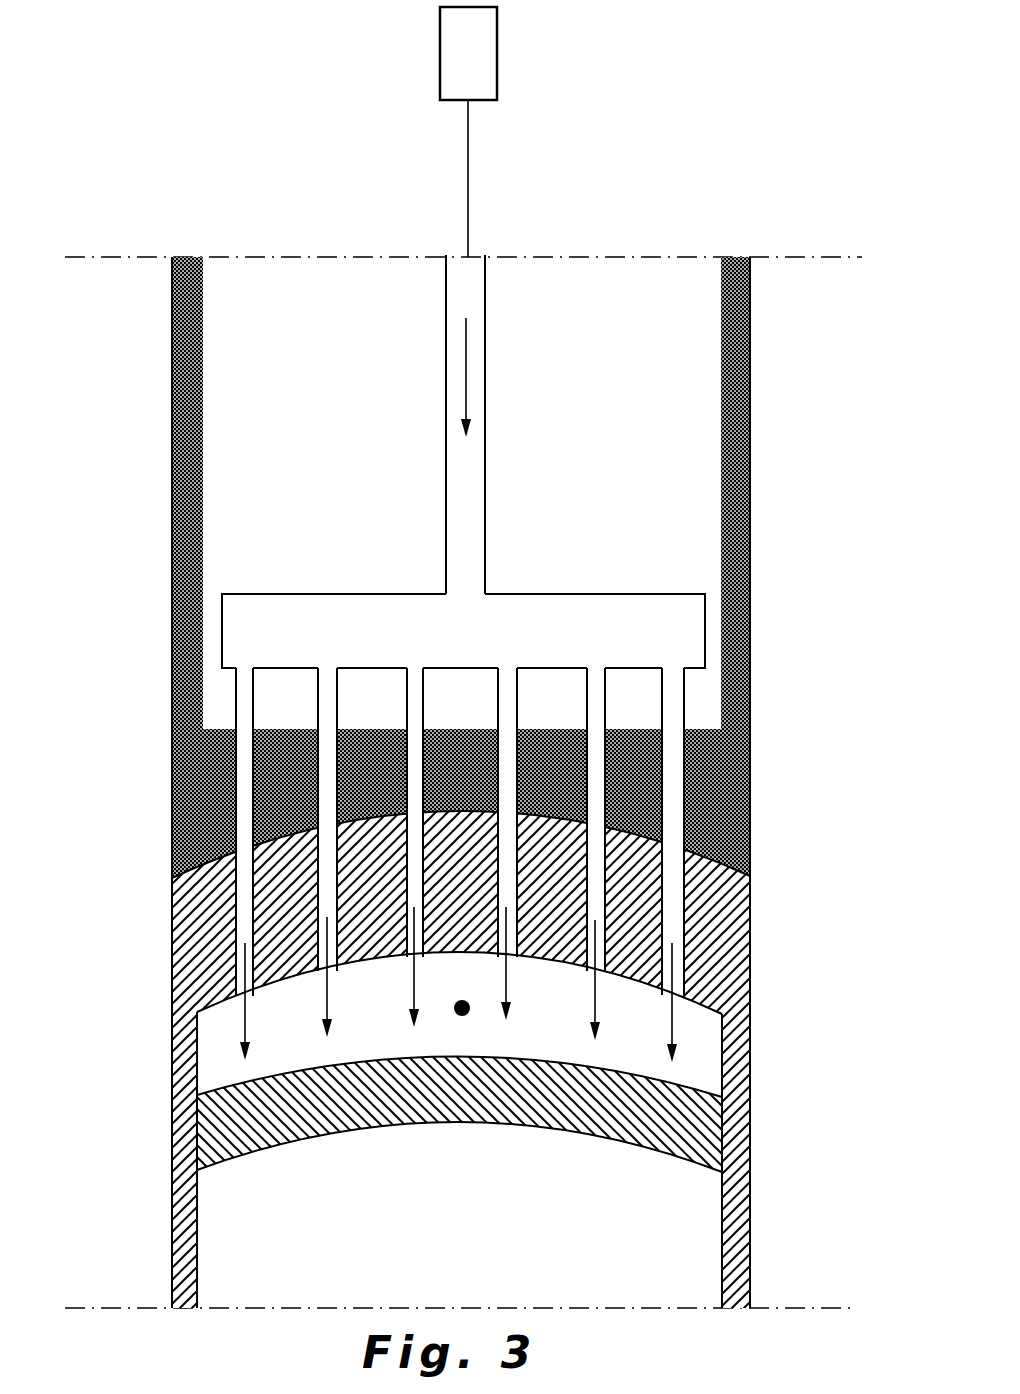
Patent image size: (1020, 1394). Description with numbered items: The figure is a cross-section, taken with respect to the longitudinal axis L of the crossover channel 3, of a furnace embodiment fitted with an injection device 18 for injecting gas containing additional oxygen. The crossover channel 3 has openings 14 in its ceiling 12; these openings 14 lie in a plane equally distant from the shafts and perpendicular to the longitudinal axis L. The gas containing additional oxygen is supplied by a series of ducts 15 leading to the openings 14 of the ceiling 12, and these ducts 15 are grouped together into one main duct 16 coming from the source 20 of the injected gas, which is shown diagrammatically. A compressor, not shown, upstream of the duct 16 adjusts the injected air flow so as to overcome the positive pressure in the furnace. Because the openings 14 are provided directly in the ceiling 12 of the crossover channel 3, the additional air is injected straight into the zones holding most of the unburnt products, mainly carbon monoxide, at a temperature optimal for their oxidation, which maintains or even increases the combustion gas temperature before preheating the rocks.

The source of the injected gas 20 is at (462, 60).
The injection device 18 is at (535, 782).
The main duct 16 is at (485, 470).
The ducts 15 is at (688, 702).
The openings 14 is at (243, 900).
The crossover channel 3 is at (725, 937).
The ceiling 12 is at (715, 1003).
The longitudinal axis L is at (460, 1012).